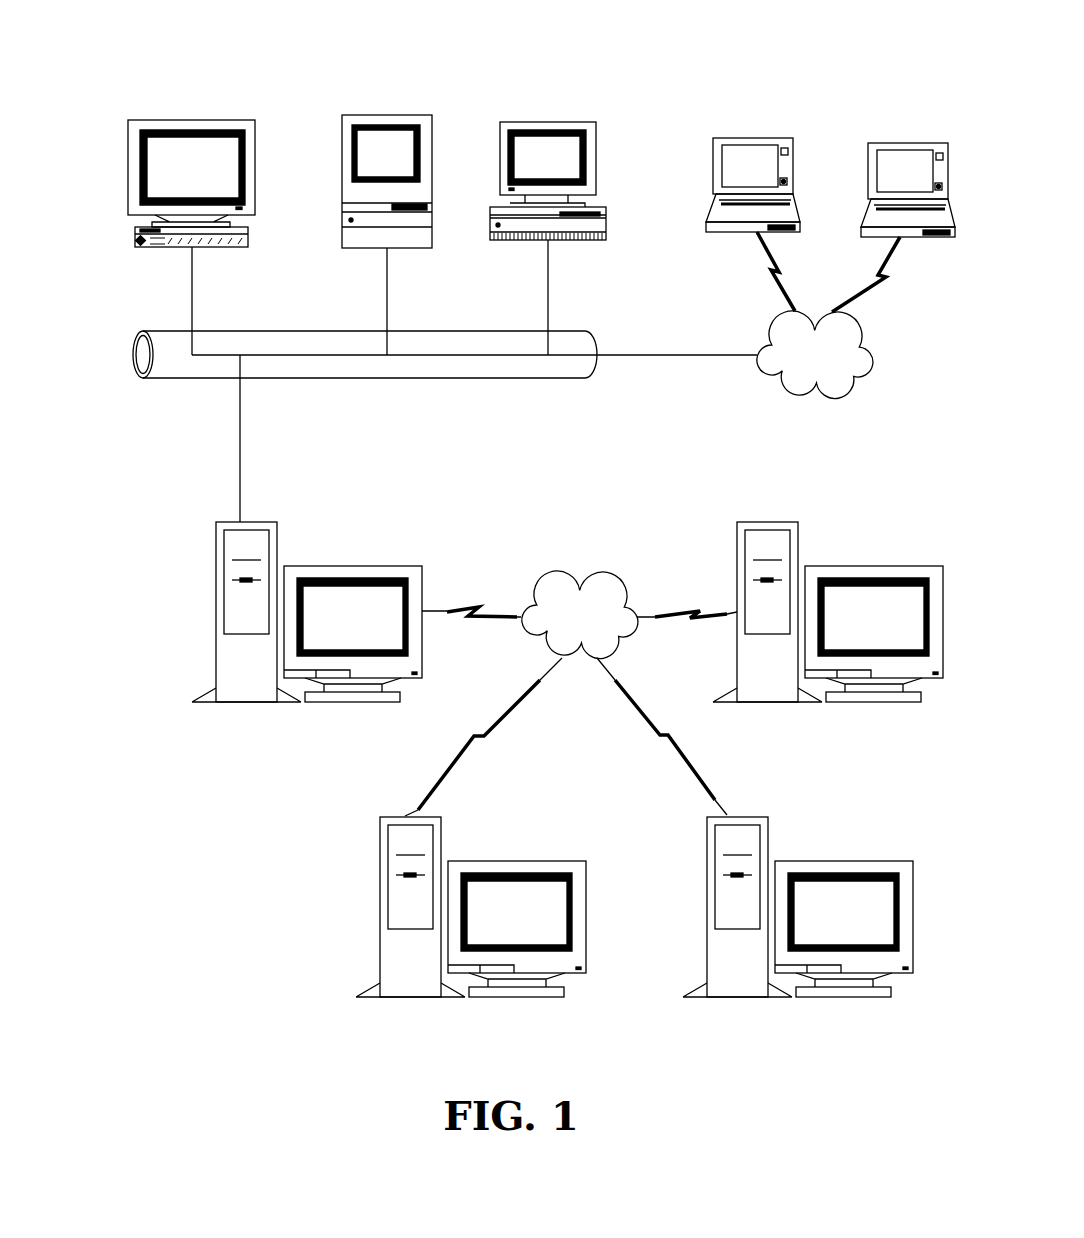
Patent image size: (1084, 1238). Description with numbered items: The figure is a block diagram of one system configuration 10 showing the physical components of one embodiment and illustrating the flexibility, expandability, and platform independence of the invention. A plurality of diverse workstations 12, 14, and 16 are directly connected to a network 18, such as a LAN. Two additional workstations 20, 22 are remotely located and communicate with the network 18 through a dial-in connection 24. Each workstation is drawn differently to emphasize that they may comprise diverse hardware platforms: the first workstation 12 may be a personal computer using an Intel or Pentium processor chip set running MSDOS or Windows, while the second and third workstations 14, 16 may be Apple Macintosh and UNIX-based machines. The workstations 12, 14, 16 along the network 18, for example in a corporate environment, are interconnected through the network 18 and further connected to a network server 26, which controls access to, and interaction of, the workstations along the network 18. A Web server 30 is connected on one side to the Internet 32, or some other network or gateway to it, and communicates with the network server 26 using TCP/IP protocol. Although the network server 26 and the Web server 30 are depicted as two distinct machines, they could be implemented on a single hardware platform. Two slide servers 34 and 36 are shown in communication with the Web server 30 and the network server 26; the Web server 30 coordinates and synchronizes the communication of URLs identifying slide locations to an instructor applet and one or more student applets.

The system configuration 10 is at (647, 34).
The first workstation 12 is at (255, 159).
The second workstation 14 is at (432, 168).
The third workstation 16 is at (596, 172).
The network 18 is at (493, 378).
The additional workstation 20 is at (793, 175).
The additional workstation 22 is at (868, 163).
The dial-in connection 24 is at (797, 400).
The network server 26 is at (301, 545).
The Web server 30 is at (816, 543).
The Internet 32 is at (563, 573).
The slide server 34 is at (468, 836).
The slide server 36 is at (797, 831).